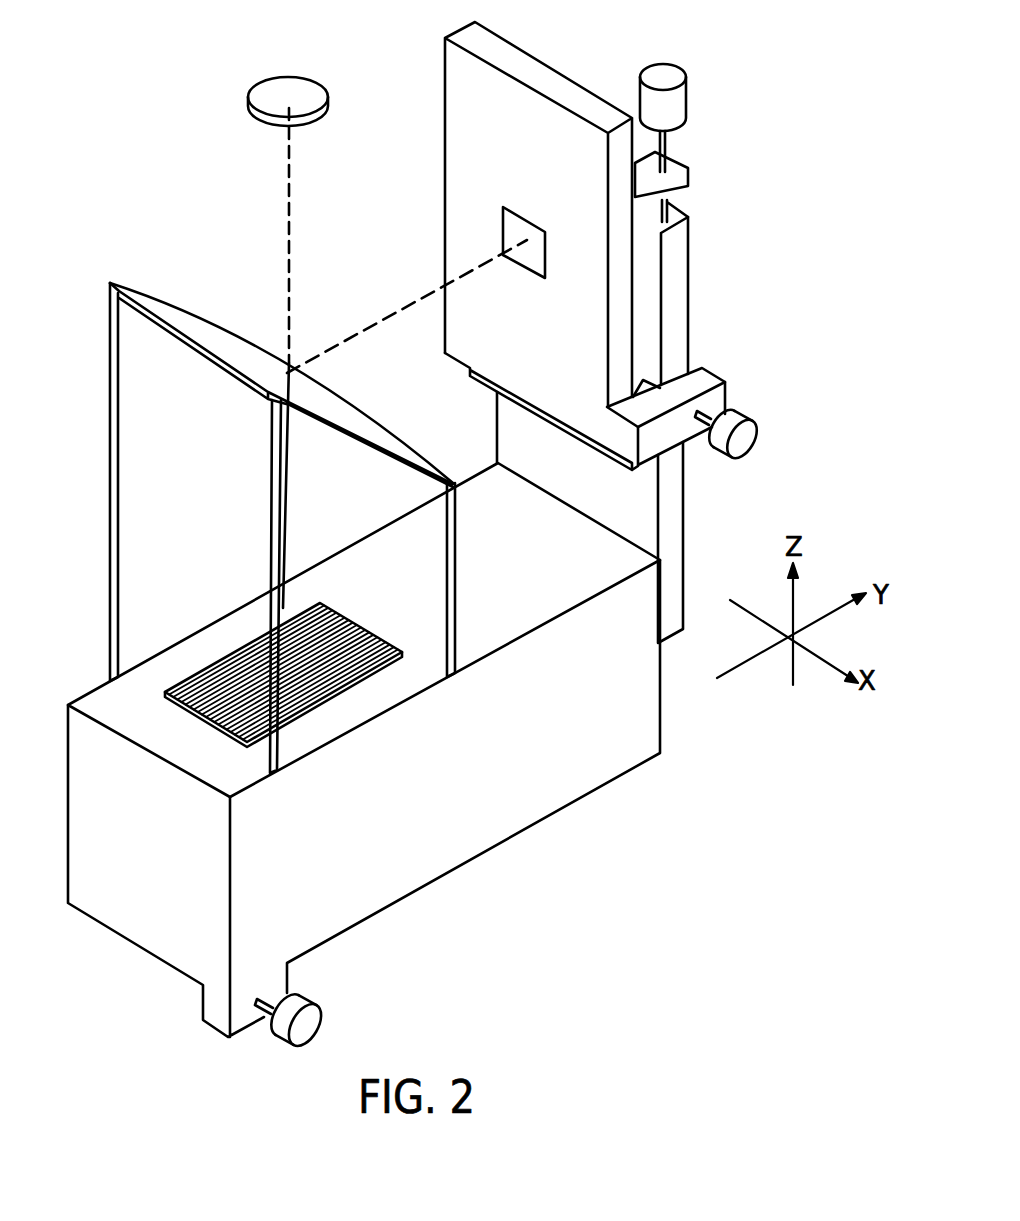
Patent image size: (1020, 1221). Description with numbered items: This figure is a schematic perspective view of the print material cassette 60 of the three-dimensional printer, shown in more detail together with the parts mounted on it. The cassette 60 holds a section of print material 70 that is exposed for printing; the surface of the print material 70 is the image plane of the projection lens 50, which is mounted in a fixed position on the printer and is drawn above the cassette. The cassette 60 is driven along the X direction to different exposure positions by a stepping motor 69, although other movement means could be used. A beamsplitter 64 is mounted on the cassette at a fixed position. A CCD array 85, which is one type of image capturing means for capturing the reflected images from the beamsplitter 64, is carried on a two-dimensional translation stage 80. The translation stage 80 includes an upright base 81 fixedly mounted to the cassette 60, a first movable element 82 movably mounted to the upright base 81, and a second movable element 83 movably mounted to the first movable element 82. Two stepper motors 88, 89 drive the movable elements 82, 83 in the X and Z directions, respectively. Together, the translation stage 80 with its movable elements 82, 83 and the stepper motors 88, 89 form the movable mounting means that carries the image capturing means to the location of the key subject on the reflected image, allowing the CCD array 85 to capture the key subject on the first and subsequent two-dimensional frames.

The projection lens 50 is at (290, 80).
The print material cassette 60 is at (648, 740).
The beamsplitter 64 is at (173, 316).
The stepping motor 69 is at (312, 1025).
The print material 70 is at (225, 660).
The two-dimensional translation stage 80 is at (724, 260).
The upright base 81 is at (677, 249).
The first movable element 82 is at (652, 344).
The second movable element 83 is at (490, 36).
The CCD array 85 is at (508, 221).
The stepper motor 88 is at (672, 72).
The stepper motor 89 is at (744, 430).